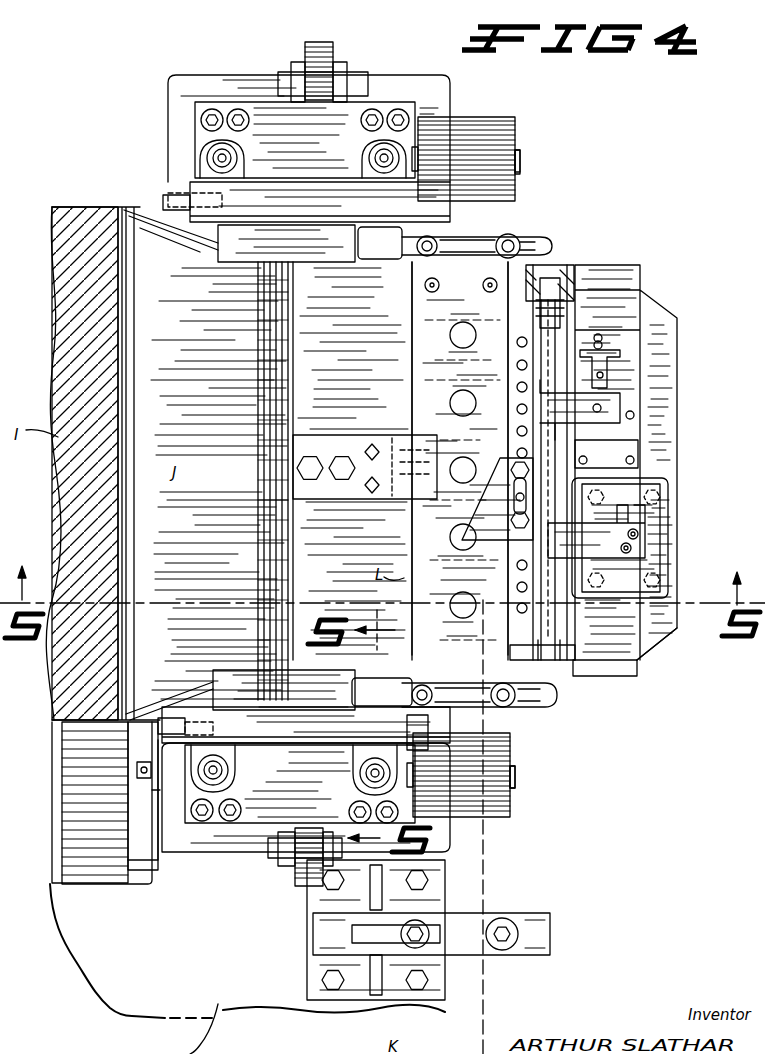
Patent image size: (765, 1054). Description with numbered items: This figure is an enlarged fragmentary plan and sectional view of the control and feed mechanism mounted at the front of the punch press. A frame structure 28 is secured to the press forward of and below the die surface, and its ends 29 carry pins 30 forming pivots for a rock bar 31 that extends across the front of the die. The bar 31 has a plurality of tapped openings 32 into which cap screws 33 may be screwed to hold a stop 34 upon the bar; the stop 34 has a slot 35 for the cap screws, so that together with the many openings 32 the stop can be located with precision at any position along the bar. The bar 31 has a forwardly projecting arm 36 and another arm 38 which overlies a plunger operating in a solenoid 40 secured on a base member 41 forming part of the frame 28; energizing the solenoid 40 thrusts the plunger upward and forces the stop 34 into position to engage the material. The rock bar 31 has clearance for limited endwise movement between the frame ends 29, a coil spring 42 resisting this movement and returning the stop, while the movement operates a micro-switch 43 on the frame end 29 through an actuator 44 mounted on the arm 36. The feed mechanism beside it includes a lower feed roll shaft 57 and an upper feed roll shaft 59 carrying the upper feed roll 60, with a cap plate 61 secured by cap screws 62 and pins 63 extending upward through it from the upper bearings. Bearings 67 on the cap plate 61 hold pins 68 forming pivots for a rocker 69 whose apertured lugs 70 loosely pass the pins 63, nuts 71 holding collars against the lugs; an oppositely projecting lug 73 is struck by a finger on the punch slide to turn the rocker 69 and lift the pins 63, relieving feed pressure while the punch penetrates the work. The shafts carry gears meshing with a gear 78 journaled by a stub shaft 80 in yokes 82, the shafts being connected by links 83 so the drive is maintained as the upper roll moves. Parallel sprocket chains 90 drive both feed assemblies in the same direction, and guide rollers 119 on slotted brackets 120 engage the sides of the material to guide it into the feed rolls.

The frame structure 28 is at (630, 266).
The frame ends 29 is at (640, 268).
The pins 30 is at (548, 258).
The rock bar 31 is at (560, 640).
The tapped openings 32 is at (516, 388).
The cap screws 33 is at (518, 520).
The stop 34 is at (482, 505).
The slot 35 is at (550, 520).
The arm 36 is at (635, 418).
The arm 38 is at (630, 552).
The solenoid 40 is at (660, 505).
The base member 41 is at (655, 640).
The coil spring 42 is at (535, 306).
The micro-switch 43 is at (605, 340).
The actuator 44 is at (620, 357).
The lower feed roll shaft 57 is at (152, 790).
The upper feed roll shaft 59 is at (522, 162).
The upper feed roll 60 is at (518, 130).
The cap plate 61 is at (240, 102).
The cap screws 62 is at (380, 115).
The pins 63 is at (238, 162).
The bearings 67 is at (168, 190).
The pins 68 is at (400, 732).
The rocker 69 is at (302, 210).
The apertured lugs 70 is at (222, 785).
The nuts 71 is at (200, 778).
The lug 73 is at (388, 258).
The gear 78 is at (318, 42).
The stub shaft 80 is at (365, 80).
The yokes 82 is at (298, 62).
The links 83 is at (345, 62).
The sprocket chains 90 is at (266, 474).
The guide rollers 119 is at (490, 945).
The slotted brackets 120 is at (550, 913).